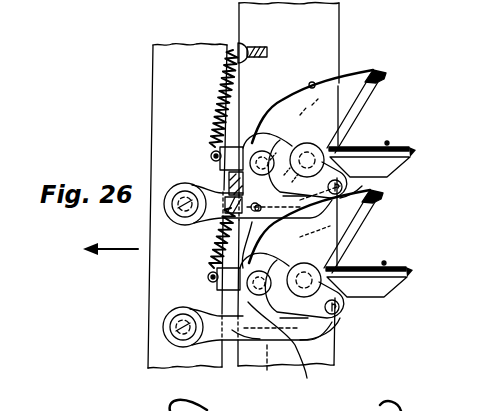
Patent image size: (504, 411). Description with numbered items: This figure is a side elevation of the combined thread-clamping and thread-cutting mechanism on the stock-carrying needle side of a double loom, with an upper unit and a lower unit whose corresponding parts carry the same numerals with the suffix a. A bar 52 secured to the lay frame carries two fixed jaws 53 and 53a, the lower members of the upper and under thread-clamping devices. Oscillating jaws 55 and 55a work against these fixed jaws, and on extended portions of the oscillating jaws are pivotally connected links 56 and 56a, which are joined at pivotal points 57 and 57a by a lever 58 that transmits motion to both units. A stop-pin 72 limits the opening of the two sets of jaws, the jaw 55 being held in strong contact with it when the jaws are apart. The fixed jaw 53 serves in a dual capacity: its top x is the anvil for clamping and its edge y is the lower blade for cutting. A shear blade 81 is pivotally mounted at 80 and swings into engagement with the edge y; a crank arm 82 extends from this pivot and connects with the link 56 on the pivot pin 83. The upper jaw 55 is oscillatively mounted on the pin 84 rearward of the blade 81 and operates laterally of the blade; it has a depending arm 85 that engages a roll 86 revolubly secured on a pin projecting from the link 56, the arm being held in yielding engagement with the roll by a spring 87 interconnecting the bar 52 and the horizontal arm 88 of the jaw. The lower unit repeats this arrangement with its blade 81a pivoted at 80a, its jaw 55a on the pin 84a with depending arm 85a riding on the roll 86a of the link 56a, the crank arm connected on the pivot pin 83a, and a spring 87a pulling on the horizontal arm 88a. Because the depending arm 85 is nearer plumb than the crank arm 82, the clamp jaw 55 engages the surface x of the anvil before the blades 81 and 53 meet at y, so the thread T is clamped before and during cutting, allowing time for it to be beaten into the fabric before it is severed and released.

The bar 52 is at (325, 40).
The lever 58 is at (175, 78).
The stop-pin 72 is at (310, 83).
The spring 87 is at (218, 114).
The horizontal arm 88 is at (211, 152).
The pivotal point 57 is at (170, 210).
The pin 84 is at (263, 150).
The pivot 80 is at (308, 158).
The oscillating jaw 55 is at (371, 72).
The shear blade 81 is at (354, 100).
The depending arm 85 is at (272, 188).
The crank arm 82 is at (346, 177).
The pivot pin 83 is at (358, 181).
The fixed jaw 53 is at (399, 165).
The thread T is at (387, 142).
The anvil surface x is at (407, 145).
The cutting edge y is at (359, 147).
The spring 87a is at (220, 236).
The horizontal arm 88a is at (208, 273).
The pivotal point 57a is at (177, 328).
The pin 84a is at (245, 300).
The pivot 80a is at (318, 282).
The oscillating jaw 55a is at (352, 203).
The shear blade 81a is at (344, 243).
The link 56 is at (348, 226).
The roll 86 is at (252, 237).
The pivot pin 83a is at (345, 315).
The link 56a is at (334, 342).
The depending arm 85a is at (294, 349).
The roll 86a is at (275, 368).
The fixed jaw 53a is at (399, 288).